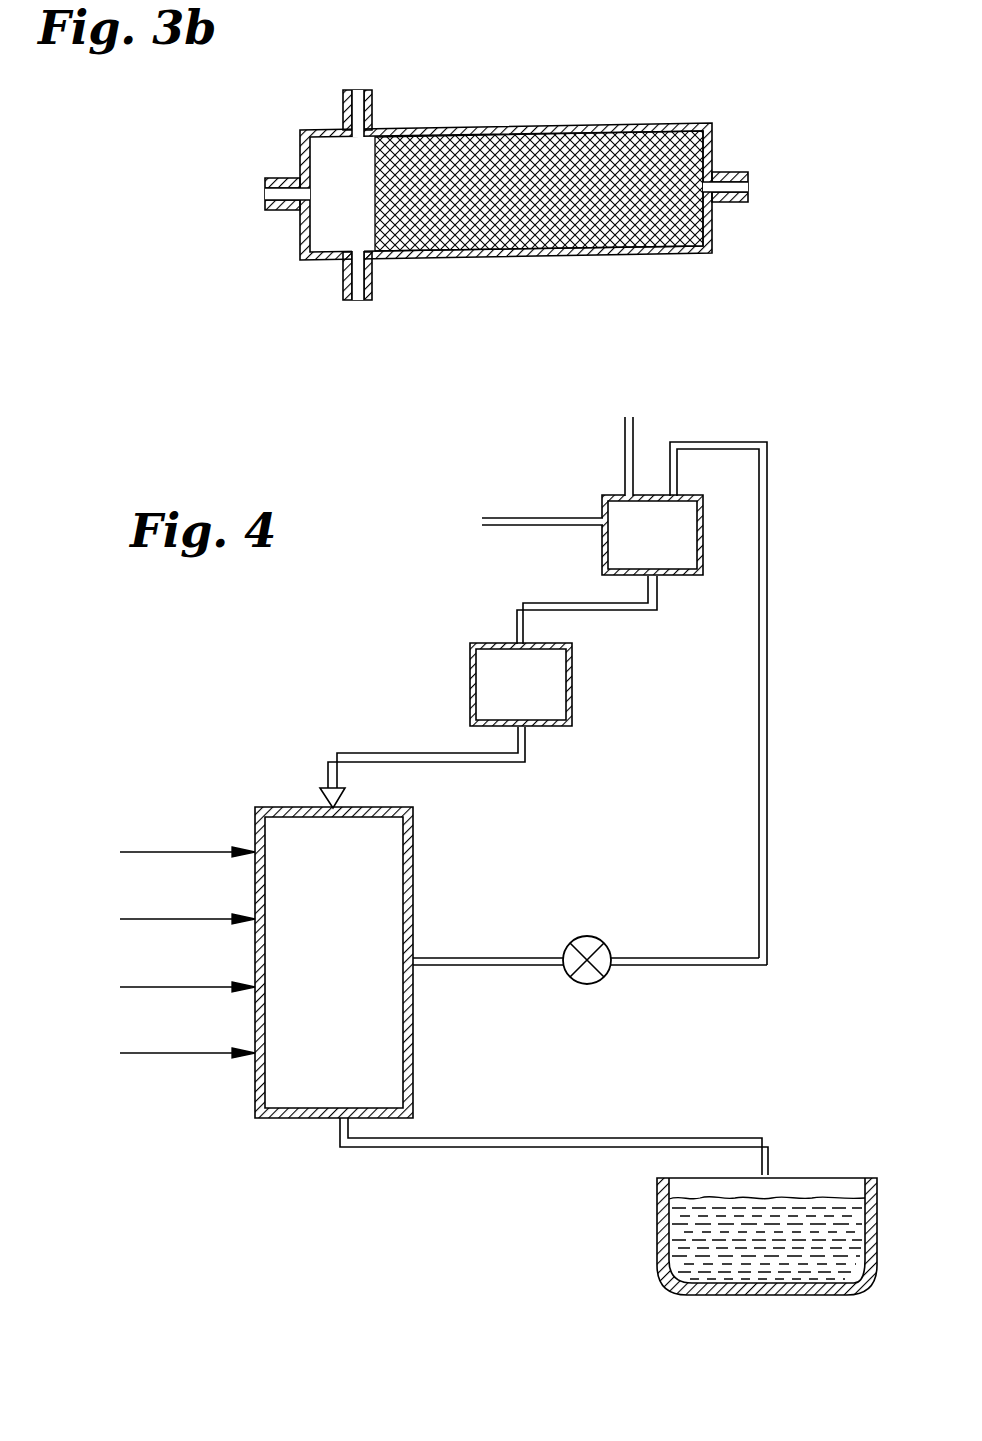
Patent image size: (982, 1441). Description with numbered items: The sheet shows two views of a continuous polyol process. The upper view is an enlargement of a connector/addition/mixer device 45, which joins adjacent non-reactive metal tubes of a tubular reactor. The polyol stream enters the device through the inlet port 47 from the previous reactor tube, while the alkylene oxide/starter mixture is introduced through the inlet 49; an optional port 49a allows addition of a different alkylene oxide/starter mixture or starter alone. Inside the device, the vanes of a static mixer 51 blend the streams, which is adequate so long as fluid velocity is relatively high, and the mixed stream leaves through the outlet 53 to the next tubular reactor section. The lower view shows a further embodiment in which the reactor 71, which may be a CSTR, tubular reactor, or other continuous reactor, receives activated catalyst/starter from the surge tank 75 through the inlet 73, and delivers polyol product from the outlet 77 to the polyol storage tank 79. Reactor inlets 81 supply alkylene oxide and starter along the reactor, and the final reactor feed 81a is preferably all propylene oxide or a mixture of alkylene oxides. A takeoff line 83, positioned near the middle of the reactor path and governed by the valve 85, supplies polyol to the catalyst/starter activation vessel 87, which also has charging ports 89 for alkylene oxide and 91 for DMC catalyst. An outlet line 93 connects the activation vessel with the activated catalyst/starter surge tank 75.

In FIG. 3B, the connector/addition/mixer device 45 is at (662, 116).
In FIG. 3B, the inlet port 47 is at (278, 194).
In FIG. 3B, the inlet for alkylene oxide/starter mixture 49 is at (356, 97).
In FIG. 3B, the optional port 49a is at (362, 302).
In FIG. 3B, the vanes of static mixer 51 is at (485, 158).
In FIG. 3B, the outlet 53 is at (750, 187).
In FIG. 4, the reactor 71 is at (377, 1025).
In FIG. 4, the inlet 73 is at (325, 804).
In FIG. 4, the surge tank 75 is at (572, 703).
In FIG. 4, the outlet 77 is at (335, 1125).
In FIG. 4, the polyol storage tank 79 is at (680, 1255).
In FIG. 4, the reactor inlets 81 is at (172, 920).
In FIG. 4, the final reactor feed 81a is at (168, 1054).
In FIG. 4, the takeoff line 83 is at (417, 957).
In FIG. 4, the valve 85 is at (605, 945).
In FIG. 4, the catalyst/starter activation vessel 87 is at (692, 576).
In FIG. 4, the inlet for alkylene oxide 89 is at (516, 523).
In FIG. 4, the inlet for DMC catalyst 91 is at (631, 436).
In FIG. 4, the outlet line 93 is at (600, 611).